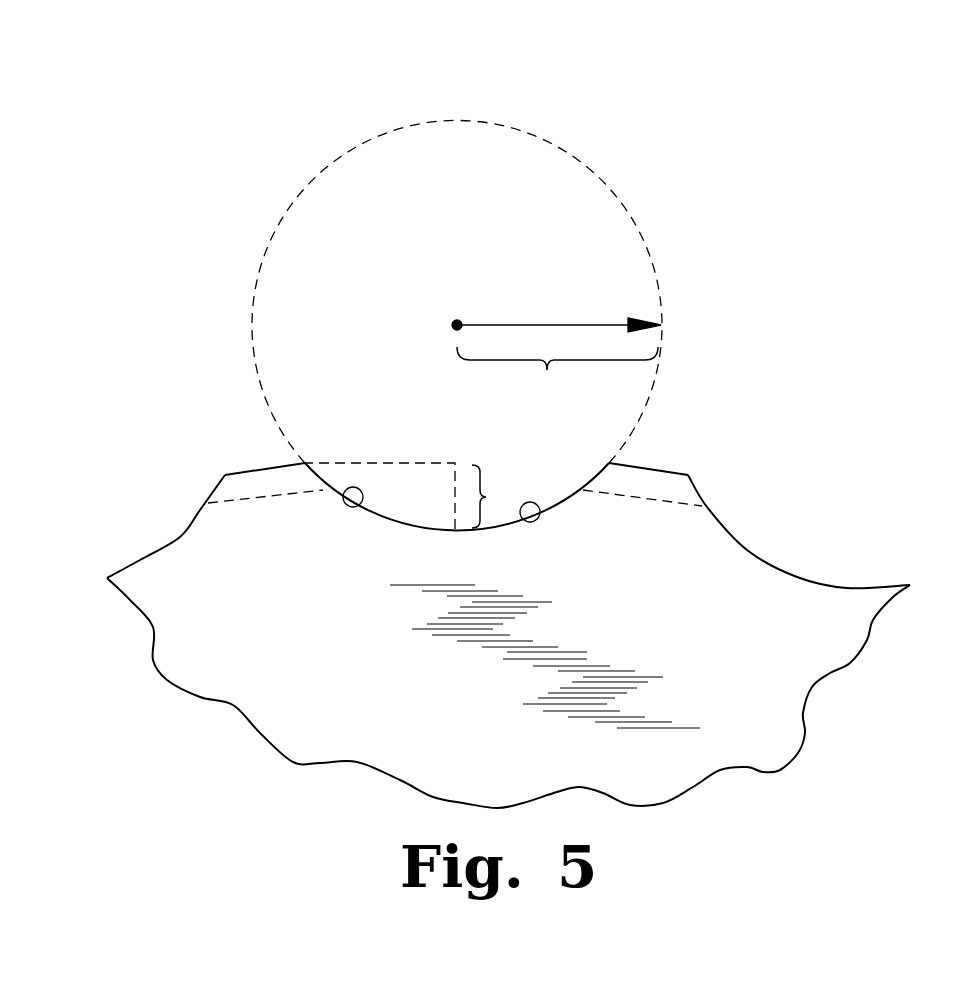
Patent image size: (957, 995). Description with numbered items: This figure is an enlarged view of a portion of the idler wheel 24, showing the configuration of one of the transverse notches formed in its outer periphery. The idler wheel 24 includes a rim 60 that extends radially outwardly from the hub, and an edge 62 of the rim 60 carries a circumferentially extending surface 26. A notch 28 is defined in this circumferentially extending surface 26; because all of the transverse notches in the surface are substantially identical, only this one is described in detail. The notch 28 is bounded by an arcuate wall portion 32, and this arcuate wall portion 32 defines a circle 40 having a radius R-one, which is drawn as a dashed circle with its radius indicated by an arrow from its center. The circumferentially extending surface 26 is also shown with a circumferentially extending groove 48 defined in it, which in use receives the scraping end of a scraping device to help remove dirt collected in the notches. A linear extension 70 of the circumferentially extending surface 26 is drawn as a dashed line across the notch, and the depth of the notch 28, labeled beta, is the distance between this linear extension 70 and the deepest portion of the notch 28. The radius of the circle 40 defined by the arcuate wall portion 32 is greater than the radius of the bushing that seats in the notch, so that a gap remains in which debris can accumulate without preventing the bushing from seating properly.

The idler wheel 24 is at (240, 693).
The circumferentially extending surface 26 is at (642, 462).
The notch 28 is at (537, 515).
The arcuate wall portion 32 is at (343, 505).
The circle 40 is at (477, 118).
The circumferentially extending groove 48 is at (668, 497).
The rim 60 is at (217, 543).
The edge 62 is at (207, 430).
The linear extension 70 is at (368, 462).